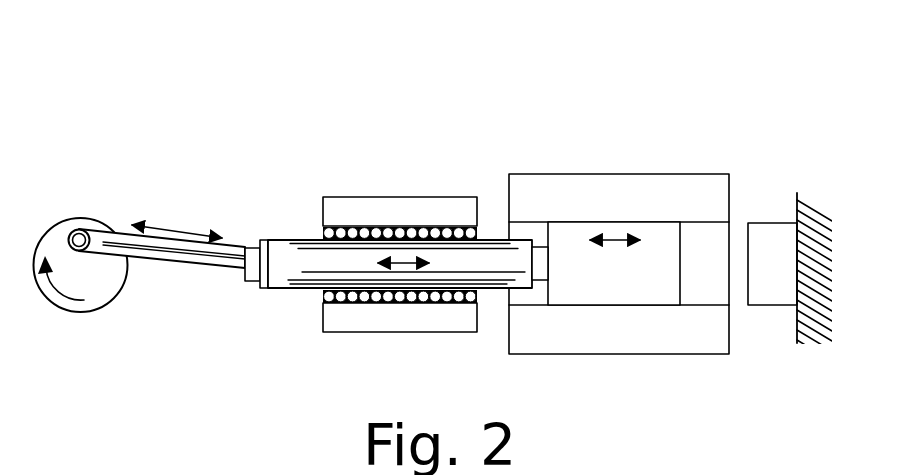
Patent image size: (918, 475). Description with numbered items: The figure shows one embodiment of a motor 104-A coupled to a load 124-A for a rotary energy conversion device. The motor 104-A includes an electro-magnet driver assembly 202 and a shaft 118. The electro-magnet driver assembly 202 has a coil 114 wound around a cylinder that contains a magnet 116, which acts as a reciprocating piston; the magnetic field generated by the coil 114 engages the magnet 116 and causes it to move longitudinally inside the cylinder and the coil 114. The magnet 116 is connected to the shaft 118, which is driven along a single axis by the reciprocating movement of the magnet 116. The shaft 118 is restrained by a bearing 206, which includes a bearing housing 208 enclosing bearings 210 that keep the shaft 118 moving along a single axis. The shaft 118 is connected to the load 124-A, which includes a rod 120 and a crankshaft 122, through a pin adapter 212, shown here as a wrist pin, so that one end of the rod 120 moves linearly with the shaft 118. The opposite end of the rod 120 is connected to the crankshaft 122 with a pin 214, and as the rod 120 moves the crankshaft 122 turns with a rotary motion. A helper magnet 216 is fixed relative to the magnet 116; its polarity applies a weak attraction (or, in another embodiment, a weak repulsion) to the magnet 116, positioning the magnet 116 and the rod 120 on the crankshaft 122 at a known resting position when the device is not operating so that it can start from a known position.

The motor 104-A is at (321, 62).
The load 124-A is at (148, 138).
The crankshaft 122 is at (37, 291).
The pin 214 is at (80, 228).
The rod 120 is at (153, 257).
The pin adapter 212 is at (248, 248).
The shaft 118 is at (307, 237).
The bearing 206 is at (400, 197).
The bearing housing 208 is at (413, 332).
The bearings 210 is at (323, 293).
The electro-magnet driver assembly 202 is at (598, 124).
The coil 114 is at (650, 353).
The magnet 116 is at (665, 223).
The helper magnet 216 is at (772, 305).